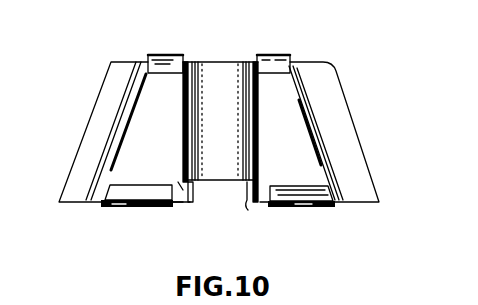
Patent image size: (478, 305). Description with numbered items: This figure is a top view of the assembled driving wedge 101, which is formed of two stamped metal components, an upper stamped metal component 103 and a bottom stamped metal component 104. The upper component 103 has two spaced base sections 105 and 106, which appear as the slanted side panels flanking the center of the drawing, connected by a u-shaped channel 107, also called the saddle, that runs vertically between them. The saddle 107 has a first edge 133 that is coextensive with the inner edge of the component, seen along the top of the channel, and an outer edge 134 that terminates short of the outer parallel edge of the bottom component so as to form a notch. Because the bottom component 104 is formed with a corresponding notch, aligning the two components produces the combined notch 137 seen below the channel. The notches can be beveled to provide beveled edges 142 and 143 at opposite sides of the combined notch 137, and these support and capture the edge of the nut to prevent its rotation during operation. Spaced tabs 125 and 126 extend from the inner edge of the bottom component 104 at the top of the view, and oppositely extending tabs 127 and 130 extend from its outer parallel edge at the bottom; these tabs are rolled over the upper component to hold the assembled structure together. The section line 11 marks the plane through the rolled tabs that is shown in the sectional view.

The driving wedge 101 is at (363, 138).
The stamped metal component 103 is at (219, 93).
The bottom stamped metal component 104 is at (308, 211).
The base section 105 is at (153, 100).
The base section 106 is at (290, 100).
The u-shaped channel 107 is at (232, 73).
The tab 125 is at (167, 54).
The tab 126 is at (276, 54).
The tab 127 is at (133, 212).
The tab 130 is at (294, 212).
The first edge 133 is at (223, 62).
The outer edge 134 is at (176, 206).
The notch 137 is at (200, 193).
The beveled edge 142 is at (186, 196).
The beveled edge 143 is at (248, 195).
The section line 11- 11 is at (172, 39).